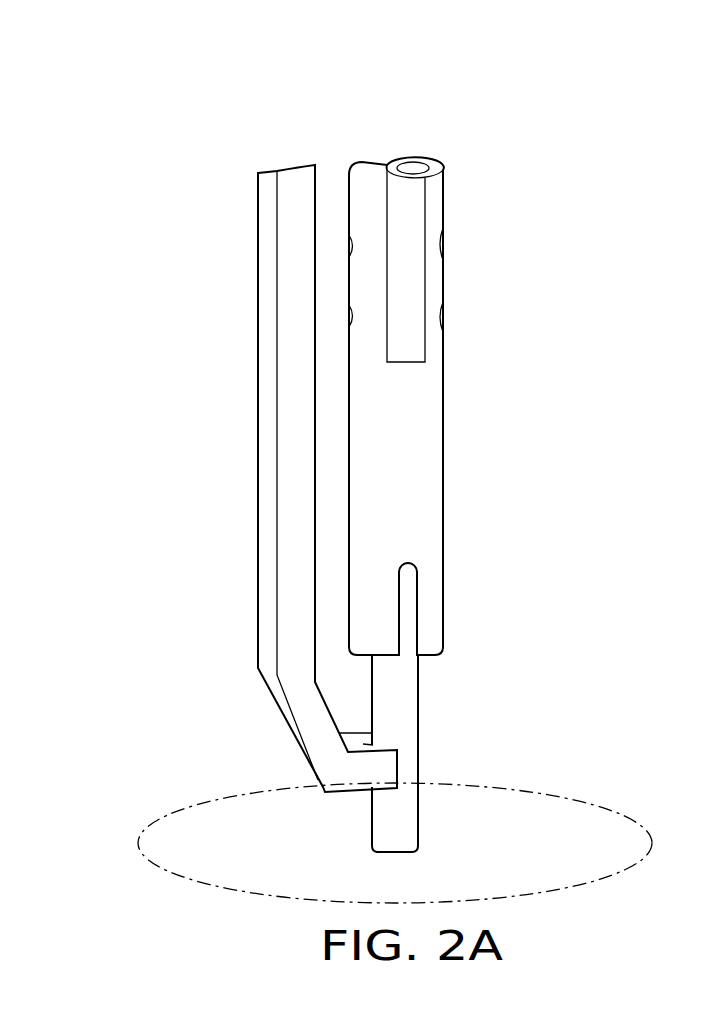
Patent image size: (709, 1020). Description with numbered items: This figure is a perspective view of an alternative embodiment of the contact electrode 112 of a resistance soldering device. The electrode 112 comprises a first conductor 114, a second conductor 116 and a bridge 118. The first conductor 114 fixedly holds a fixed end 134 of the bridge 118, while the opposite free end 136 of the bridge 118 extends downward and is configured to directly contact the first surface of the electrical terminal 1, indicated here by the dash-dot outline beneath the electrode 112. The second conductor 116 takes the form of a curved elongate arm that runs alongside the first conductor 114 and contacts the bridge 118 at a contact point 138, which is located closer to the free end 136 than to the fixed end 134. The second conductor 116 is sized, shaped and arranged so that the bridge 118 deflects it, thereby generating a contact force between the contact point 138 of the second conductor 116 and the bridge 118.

The electrical terminal 1 is at (198, 847).
The electrode 112 is at (261, 141).
The first conductor 114 is at (427, 407).
The second conductor 116 is at (263, 335).
The bridge 118 is at (383, 825).
The fixed end 134 is at (407, 610).
The free end 136 is at (413, 838).
The contact point 138 is at (400, 763).